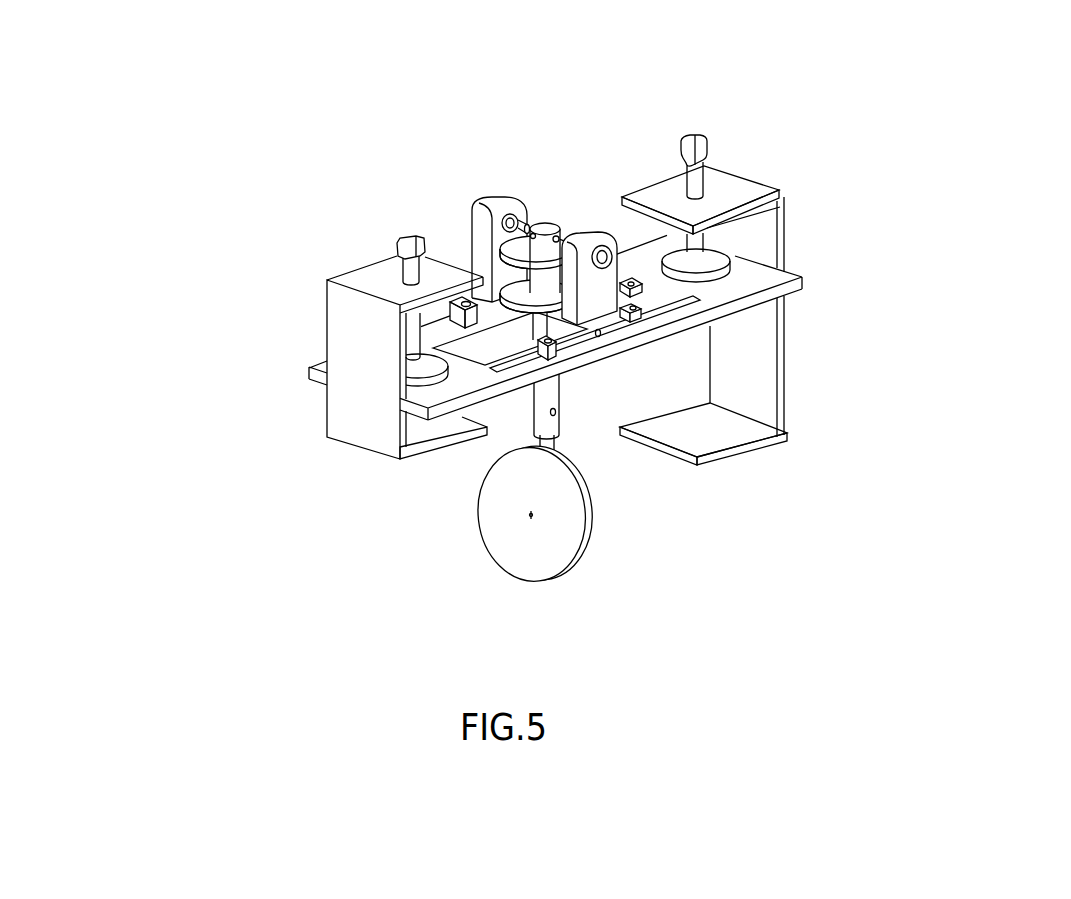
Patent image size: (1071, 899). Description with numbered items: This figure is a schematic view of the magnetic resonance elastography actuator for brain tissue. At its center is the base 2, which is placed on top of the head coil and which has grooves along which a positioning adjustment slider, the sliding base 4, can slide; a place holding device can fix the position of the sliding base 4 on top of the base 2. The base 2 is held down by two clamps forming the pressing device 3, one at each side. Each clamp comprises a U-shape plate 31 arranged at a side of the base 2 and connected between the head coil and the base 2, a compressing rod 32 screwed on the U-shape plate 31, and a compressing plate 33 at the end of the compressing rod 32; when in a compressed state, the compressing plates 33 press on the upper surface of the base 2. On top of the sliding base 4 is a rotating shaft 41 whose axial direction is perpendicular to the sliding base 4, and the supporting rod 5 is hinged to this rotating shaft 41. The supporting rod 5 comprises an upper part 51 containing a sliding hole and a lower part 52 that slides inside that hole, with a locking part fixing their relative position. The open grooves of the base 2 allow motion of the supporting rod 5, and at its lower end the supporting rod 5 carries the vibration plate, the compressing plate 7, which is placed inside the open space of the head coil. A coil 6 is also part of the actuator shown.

The base 2 is at (733, 307).
The pressing device 3 is at (515, 232).
The U-shape plate 31 is at (343, 305).
The compressing rod 32 is at (414, 343).
The compressing plate 33 is at (412, 381).
The sliding base 4 is at (490, 203).
The rotating shaft 41 is at (523, 222).
The supporting rod 5 is at (675, 502).
The upper part of the supporting rod 51 is at (554, 393).
The lower part of the supporting rod 52 is at (553, 442).
The coil 6 is at (561, 237).
The compressing plate 7 is at (512, 548).